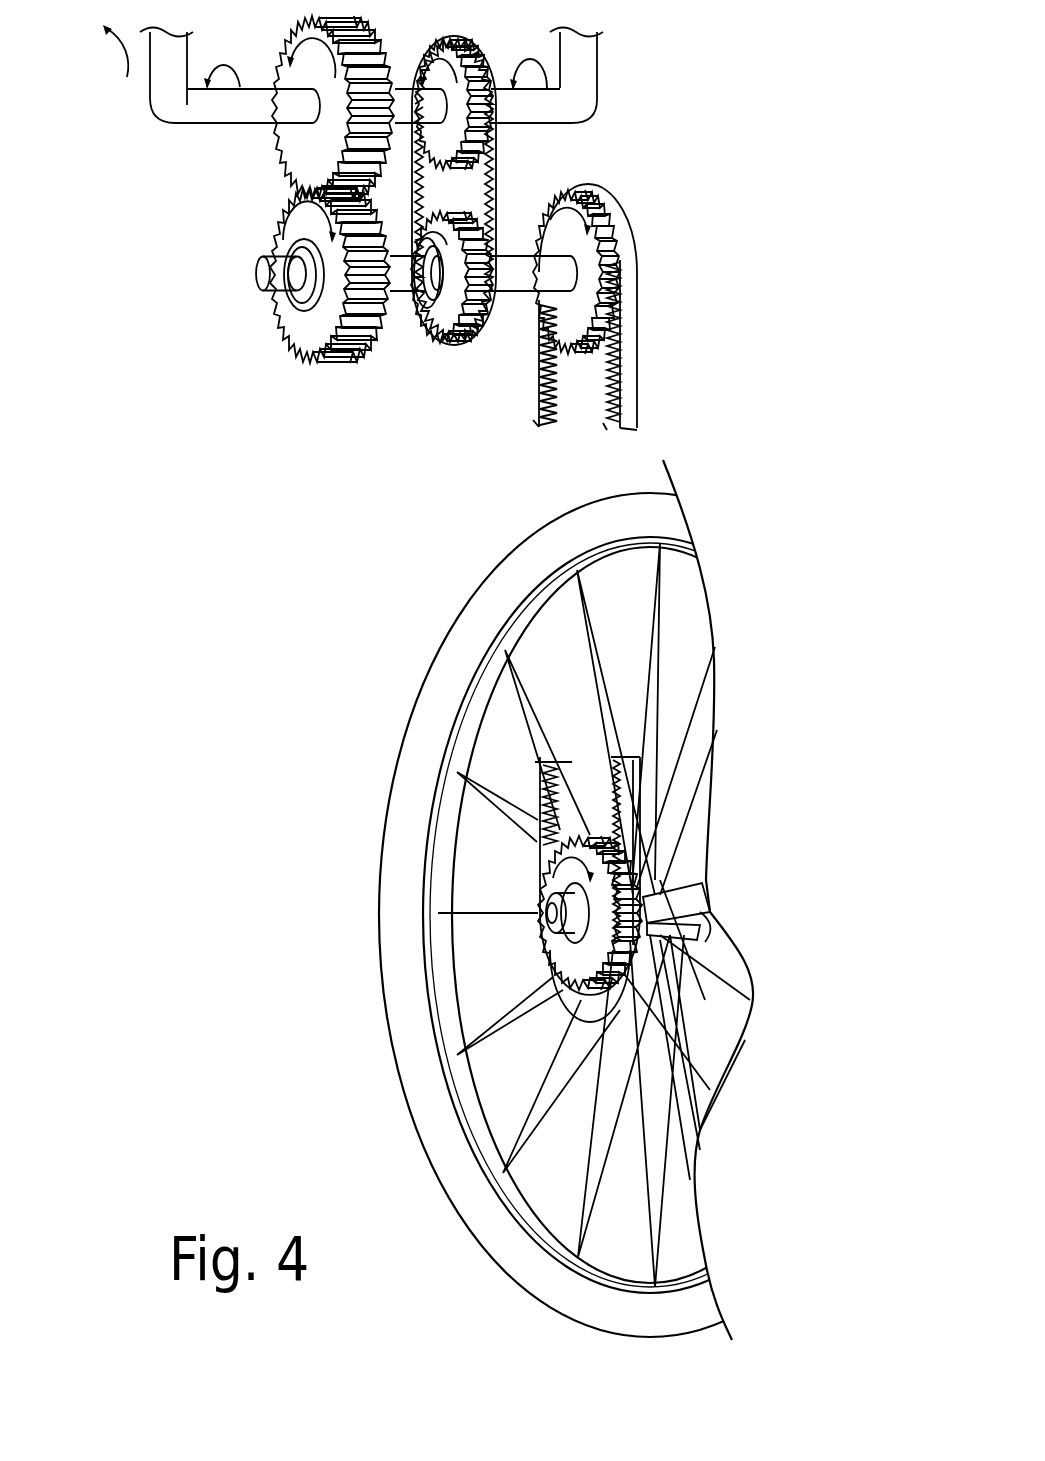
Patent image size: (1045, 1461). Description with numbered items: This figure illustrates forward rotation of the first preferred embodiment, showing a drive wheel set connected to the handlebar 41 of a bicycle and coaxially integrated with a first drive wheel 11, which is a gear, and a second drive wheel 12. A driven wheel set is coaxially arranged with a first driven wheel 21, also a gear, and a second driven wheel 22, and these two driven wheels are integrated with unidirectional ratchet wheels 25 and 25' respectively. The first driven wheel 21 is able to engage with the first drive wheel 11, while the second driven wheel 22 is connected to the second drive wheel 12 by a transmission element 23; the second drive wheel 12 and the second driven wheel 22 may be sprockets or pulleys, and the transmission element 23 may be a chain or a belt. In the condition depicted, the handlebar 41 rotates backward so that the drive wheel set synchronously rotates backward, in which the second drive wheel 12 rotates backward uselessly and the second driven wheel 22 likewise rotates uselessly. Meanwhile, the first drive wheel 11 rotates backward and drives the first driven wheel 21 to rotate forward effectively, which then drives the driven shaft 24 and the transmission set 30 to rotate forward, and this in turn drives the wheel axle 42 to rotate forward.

The handlebar 41 is at (590, 56).
The first drive wheel 11 is at (318, 163).
The second drive wheel 12 is at (460, 112).
The transmission element 23 is at (483, 177).
The first driven wheel 21 is at (297, 333).
The unidirectional ratchet wheel 25 is at (244, 278).
The driven shaft 24 is at (407, 277).
The unidirectional ratchet wheel 25' is at (437, 344).
The second driven wheel 22 is at (487, 313).
The transmission set 30 is at (650, 247).
The wheel axle 42 is at (547, 910).